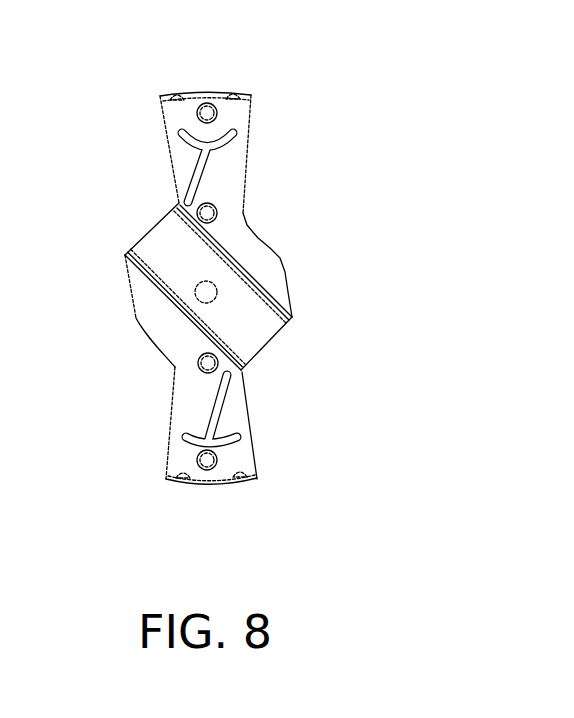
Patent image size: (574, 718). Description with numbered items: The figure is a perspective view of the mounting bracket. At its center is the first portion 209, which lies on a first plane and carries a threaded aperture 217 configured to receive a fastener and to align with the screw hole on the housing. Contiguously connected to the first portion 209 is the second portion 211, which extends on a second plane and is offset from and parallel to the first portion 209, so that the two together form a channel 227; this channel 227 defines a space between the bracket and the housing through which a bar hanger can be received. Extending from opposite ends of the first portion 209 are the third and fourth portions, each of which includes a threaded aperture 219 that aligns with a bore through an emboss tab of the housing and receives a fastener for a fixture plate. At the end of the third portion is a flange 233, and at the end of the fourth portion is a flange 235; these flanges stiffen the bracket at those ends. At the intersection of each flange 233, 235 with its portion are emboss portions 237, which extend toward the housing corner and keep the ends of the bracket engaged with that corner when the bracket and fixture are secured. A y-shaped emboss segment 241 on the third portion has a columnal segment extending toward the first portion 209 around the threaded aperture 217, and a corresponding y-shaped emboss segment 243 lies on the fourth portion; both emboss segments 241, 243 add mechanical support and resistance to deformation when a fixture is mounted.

The first portion 209 is at (283, 273).
The second portion 211 is at (262, 347).
The threaded aperture 217 is at (218, 213).
The threaded aperture 219 is at (218, 115).
The channel 227 is at (142, 238).
The flange 233 is at (161, 112).
The flange 235 is at (166, 446).
The emboss portion 237 is at (178, 93).
The emboss segment 241 is at (196, 162).
The emboss segment 243 is at (199, 409).